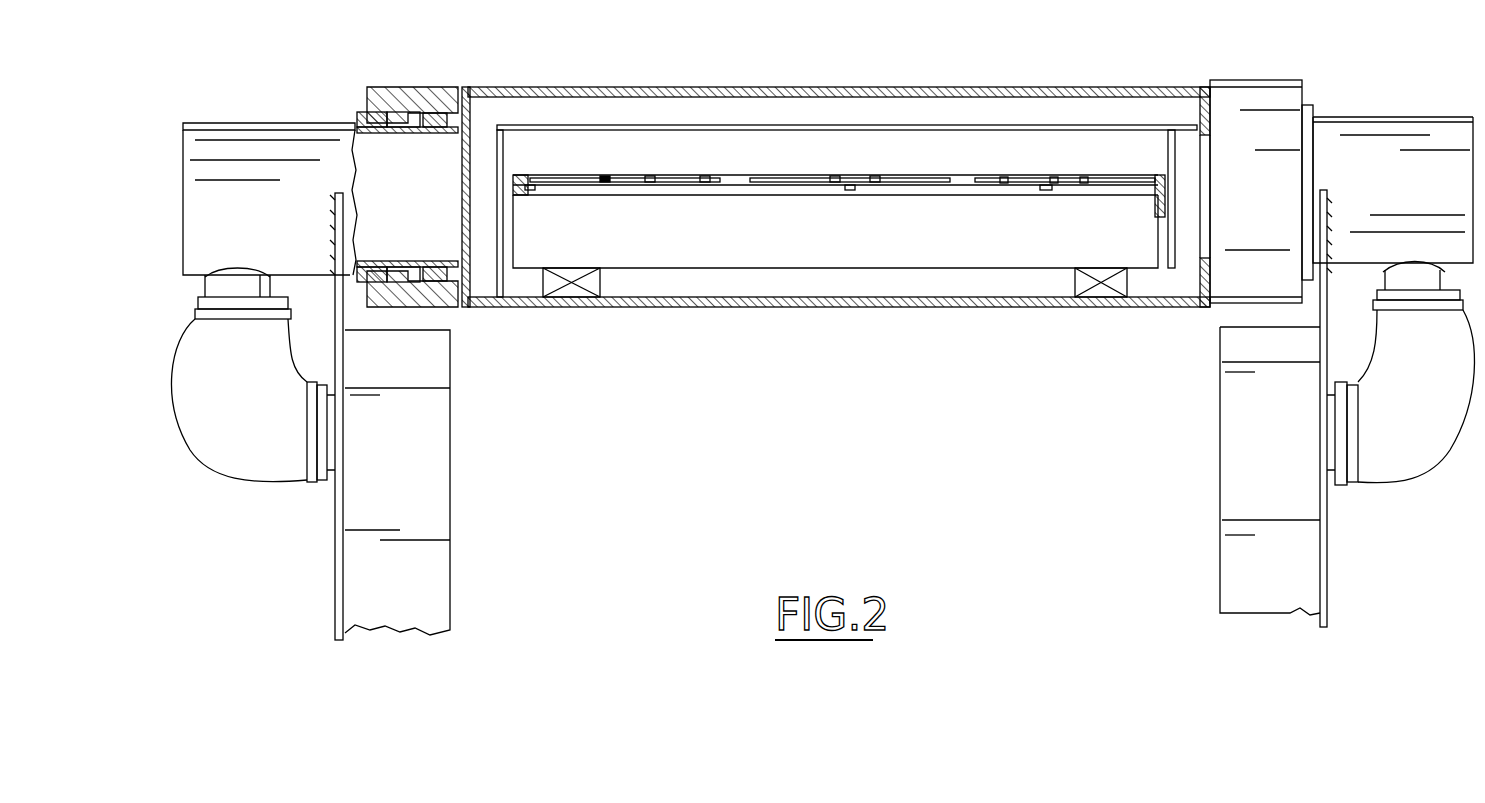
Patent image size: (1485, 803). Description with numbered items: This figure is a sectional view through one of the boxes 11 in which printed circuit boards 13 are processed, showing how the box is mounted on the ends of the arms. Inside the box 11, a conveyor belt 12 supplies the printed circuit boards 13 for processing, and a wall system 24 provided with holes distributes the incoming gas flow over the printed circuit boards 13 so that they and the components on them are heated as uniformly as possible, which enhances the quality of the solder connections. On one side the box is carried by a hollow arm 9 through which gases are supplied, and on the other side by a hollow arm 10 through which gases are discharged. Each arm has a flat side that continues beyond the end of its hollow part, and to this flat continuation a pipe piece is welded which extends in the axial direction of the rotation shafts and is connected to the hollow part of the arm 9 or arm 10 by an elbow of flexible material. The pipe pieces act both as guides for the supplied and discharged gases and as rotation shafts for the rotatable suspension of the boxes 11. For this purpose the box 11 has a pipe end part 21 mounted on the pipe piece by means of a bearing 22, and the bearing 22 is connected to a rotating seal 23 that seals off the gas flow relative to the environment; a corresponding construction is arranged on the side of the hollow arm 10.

The arm 9 is at (420, 500).
The hollow arm 10 is at (1232, 507).
The box 11 is at (745, 78).
The conveyor belt 12 is at (870, 200).
The printed circuit board 13 is at (975, 175).
The pipe end part 21 is at (367, 93).
The bearing 22 is at (410, 133).
The rotating seal 23 is at (438, 115).
The wall system 24 is at (1026, 125).